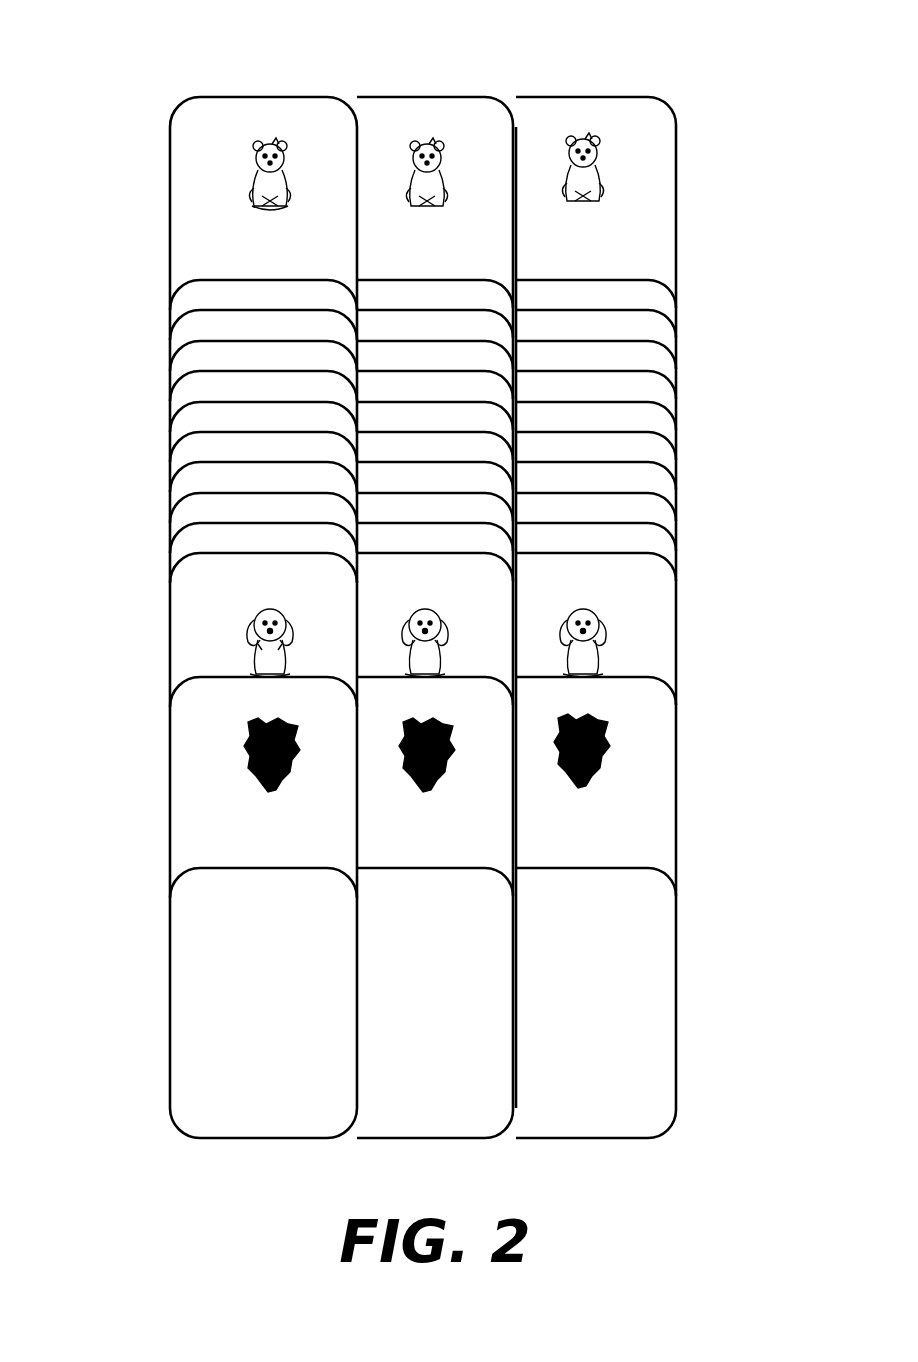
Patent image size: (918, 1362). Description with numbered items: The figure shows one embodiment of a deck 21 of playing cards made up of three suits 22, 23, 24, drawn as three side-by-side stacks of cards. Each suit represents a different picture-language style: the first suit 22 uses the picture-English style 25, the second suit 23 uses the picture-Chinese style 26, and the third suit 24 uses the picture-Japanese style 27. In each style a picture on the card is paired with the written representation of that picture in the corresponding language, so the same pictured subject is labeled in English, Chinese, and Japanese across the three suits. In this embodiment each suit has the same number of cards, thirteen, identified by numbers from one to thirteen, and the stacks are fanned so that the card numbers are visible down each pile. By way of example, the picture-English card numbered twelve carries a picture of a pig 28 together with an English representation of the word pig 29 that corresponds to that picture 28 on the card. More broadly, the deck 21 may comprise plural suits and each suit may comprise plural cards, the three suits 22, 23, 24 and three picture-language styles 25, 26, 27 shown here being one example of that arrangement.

The deck 21 is at (604, 55).
The suit 22 is at (237, 101).
The suit 23 is at (413, 101).
The suit 24 is at (623, 98).
The picture-English style 25 is at (240, 152).
The picture-Chinese style 26 is at (455, 150).
The picture-Japanese style 27 is at (658, 221).
The picture of pig 28 is at (210, 733).
The English representation of "pig" 29 is at (185, 806).